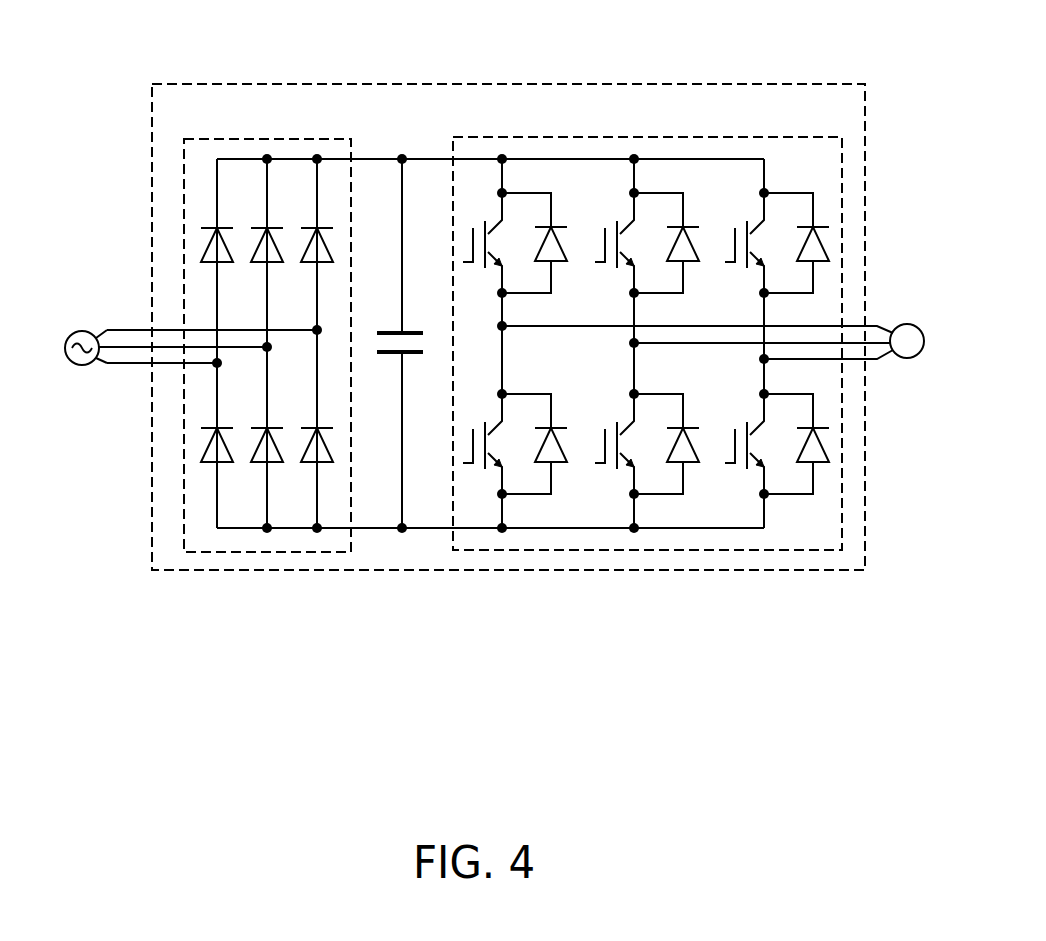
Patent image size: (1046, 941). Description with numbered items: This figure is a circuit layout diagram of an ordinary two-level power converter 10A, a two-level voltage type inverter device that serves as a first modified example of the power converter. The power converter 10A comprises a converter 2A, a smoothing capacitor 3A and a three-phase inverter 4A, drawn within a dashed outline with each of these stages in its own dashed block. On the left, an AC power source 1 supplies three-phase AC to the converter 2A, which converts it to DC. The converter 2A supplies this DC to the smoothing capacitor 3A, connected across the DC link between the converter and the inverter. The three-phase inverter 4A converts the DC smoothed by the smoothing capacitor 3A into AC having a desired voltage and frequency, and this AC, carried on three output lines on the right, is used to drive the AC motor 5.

The power converter 10A is at (412, 84).
The converter 2A is at (272, 139).
The smoothing capacitor 3A is at (402, 330).
The three-phase inverter 4A is at (622, 137).
The AC power source 1 is at (86, 331).
The AC motor 5 is at (906, 324).